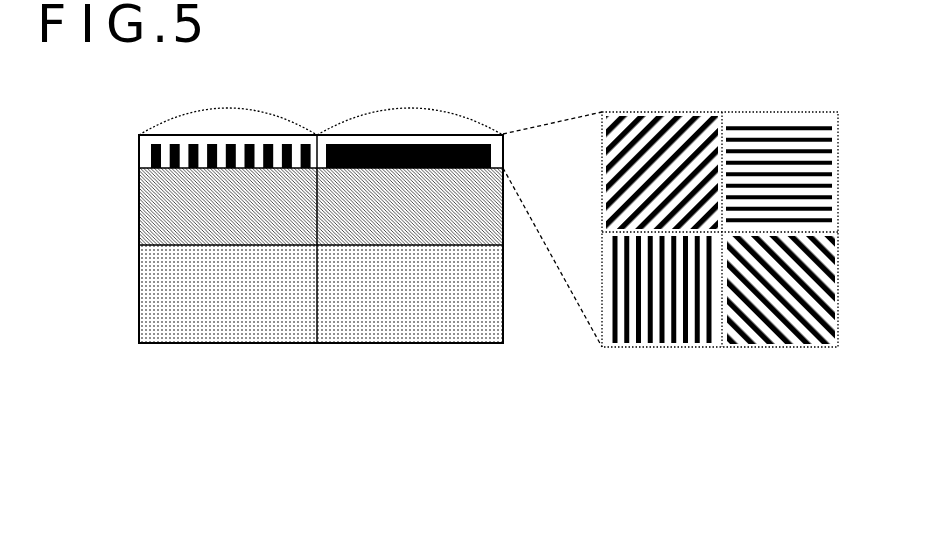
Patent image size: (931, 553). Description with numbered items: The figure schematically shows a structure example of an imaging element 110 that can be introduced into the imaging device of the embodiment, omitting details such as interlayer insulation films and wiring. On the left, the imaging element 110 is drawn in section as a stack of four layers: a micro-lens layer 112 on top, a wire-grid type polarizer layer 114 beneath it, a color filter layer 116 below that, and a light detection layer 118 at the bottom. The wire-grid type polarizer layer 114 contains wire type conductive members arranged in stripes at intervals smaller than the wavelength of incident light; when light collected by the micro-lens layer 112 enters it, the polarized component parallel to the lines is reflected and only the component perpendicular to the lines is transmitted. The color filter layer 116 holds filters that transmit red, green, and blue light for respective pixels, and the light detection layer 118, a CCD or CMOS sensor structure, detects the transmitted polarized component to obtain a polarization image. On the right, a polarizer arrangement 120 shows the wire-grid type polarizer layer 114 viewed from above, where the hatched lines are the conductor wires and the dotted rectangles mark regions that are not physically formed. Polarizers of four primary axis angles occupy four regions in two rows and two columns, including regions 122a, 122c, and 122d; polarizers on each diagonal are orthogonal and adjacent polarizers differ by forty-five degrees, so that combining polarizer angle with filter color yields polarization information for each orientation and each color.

The imaging element 110 is at (281, 290).
The micro-lens layer 112 is at (285, 116).
The wire-grid type polarizer layer 114 is at (138, 153).
The color filter layer 116 is at (138, 210).
The light detection layer 118 is at (100, 298).
The polarizer arrangement 120 is at (720, 255).
The region 122a is at (655, 110).
The region 122c is at (781, 324).
The region 122d is at (652, 348).